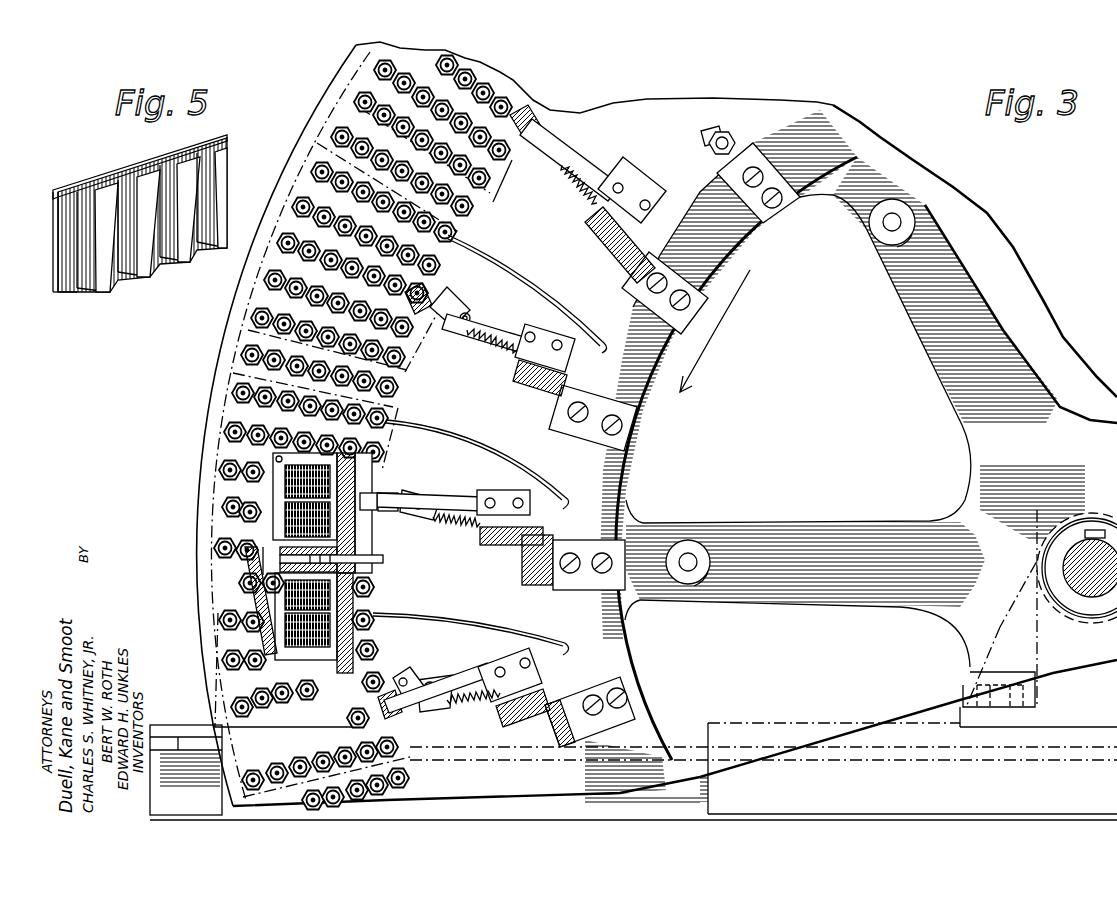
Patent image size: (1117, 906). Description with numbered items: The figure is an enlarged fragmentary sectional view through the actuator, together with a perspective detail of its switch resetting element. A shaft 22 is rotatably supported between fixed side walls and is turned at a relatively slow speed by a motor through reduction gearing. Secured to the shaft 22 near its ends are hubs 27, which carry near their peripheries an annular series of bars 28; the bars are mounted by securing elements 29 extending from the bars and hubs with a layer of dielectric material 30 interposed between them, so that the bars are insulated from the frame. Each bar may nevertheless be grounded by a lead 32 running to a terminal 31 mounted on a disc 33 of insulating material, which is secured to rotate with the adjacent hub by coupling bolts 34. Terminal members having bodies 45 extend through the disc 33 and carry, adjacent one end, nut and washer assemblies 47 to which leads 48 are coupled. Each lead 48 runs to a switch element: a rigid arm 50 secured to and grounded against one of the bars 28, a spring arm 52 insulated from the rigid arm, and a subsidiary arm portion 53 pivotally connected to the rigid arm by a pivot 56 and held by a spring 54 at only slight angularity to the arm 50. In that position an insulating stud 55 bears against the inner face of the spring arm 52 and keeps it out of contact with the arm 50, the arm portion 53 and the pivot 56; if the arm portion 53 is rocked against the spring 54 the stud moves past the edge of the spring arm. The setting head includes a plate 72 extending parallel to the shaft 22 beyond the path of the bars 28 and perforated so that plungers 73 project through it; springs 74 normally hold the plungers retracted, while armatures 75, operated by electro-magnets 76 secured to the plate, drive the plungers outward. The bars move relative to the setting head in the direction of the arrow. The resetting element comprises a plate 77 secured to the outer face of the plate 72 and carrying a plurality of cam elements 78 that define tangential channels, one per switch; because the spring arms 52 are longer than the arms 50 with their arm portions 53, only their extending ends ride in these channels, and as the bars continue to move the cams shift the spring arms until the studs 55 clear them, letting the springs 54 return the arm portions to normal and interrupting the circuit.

In FIG. 3, the shaft 22 is at (1075, 565).
In FIG. 3, the hubs 27 is at (625, 493).
In FIG. 3, the bars 28 is at (530, 375).
In FIG. 3, the securing elements 29 is at (634, 447).
In FIG. 3, the layer of dielectric material 30 is at (565, 427).
In FIG. 3, the terminals 31 is at (733, 140).
In FIG. 3, the leads 32 is at (710, 140).
In FIG. 3, the disc of insulating material 33 is at (987, 262).
In FIG. 3, the coupling bolts 34 is at (890, 224).
In FIG. 3, the terminal member bodies 45 is at (262, 318).
In FIG. 3, the nut and washer assemblies 47 is at (265, 283).
In FIG. 3, the leads 48 is at (547, 295).
In FIG. 3, the rigid arm 50 is at (524, 333).
In FIG. 3, the spring arm 52 is at (424, 318).
In FIG. 3, the subsidiary arm portion 53 is at (563, 166).
In FIG. 3, the spring 54 is at (464, 530).
In FIG. 3, the insulating stud 55 is at (396, 501).
In FIG. 3, the pivot 56 is at (568, 153).
In FIG. 3, the plate 72 is at (363, 607).
In FIG. 3, the plungers 73 is at (360, 558).
In FIG. 3, the springs 74 is at (353, 550).
In FIG. 3, the armatures 75 is at (277, 520).
In FIG. 3, the electro-magnets 76 is at (297, 477).
In FIG. 3, the plate 77 is at (366, 482).
In FIG. 5, the plate 77 is at (96, 185).
In FIG. 3, the cam elements 78 is at (400, 493).
In FIG. 5, the cam elements 78 is at (170, 258).